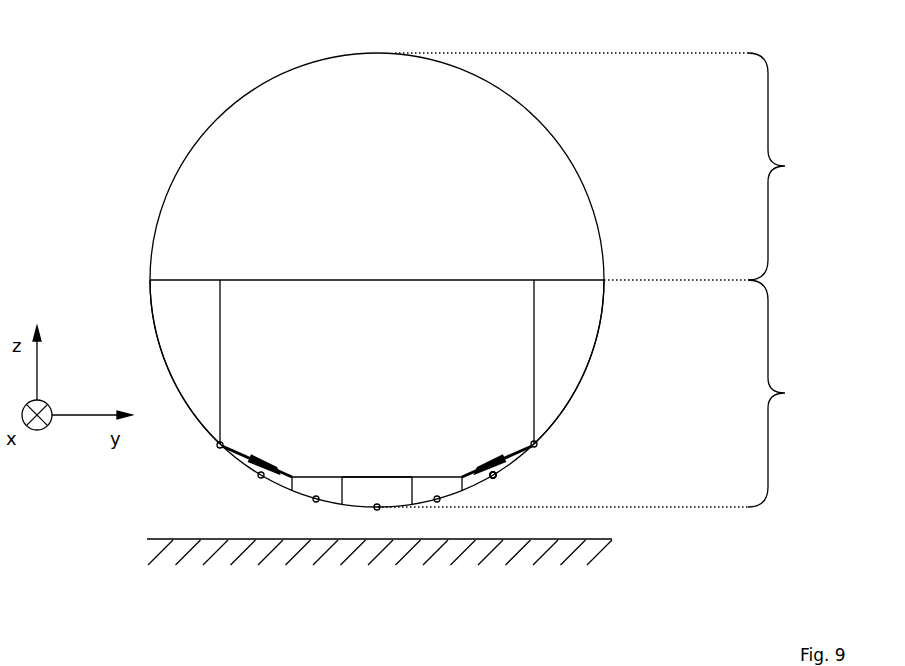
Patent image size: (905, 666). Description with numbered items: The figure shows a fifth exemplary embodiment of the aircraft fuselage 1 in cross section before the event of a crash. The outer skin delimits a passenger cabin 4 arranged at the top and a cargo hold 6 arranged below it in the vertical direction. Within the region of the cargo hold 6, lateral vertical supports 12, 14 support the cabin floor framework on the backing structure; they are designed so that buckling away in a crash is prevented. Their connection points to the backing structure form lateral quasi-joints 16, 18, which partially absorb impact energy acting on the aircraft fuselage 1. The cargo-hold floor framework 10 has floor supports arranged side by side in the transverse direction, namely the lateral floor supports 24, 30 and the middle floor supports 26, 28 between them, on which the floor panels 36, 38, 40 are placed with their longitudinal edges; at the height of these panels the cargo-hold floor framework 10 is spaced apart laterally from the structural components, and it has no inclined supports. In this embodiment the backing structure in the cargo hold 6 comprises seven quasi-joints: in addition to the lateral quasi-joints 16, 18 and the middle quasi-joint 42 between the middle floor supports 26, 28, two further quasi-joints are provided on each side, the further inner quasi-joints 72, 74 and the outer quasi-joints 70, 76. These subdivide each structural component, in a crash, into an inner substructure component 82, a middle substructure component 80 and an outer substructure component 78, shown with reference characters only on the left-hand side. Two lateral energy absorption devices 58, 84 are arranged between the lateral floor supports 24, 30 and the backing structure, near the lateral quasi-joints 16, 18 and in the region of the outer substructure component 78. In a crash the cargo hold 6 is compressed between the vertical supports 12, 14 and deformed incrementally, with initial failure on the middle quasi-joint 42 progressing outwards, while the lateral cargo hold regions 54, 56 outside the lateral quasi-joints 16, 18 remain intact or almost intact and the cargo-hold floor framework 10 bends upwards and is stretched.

The aircraft fuselage 1 is at (34, 30).
The passenger cabin 4 is at (602, 166).
The cargo hold 6 is at (593, 393).
The cargo-hold floor framework 10 is at (478, 443).
The vertical support 12 is at (220, 383).
The vertical support 14 is at (534, 421).
The lateral quasi-joint 16 is at (220, 445).
The lateral quasi-joint 18 is at (534, 444).
The lateral floor support 24 is at (292, 478).
The middle floor support 26 is at (380, 478).
The middle floor support 28 is at (478, 484).
The lateral floor support 30 is at (495, 476).
The floor panel 36 is at (318, 478).
The floor panel 38 is at (468, 488).
The floor panel 40 is at (493, 477).
The middle quasi-joint 42 is at (437, 500).
The lateral cargo hold region 54 is at (200, 340).
The lateral cargo hold region 56 is at (560, 313).
The lateral energy absorption device 58 is at (249, 468).
The outer quasi-joint 70 is at (261, 475).
The further inner quasi-joint 72 is at (316, 503).
The further inner quasi-joint 74 is at (490, 479).
The outer quasi-joint 76 is at (496, 477).
The outer substructure component 78 is at (243, 463).
The middle substructure component 80 is at (299, 493).
The inner substructure component 82 is at (440, 478).
The lateral energy absorption device 84 is at (498, 467).